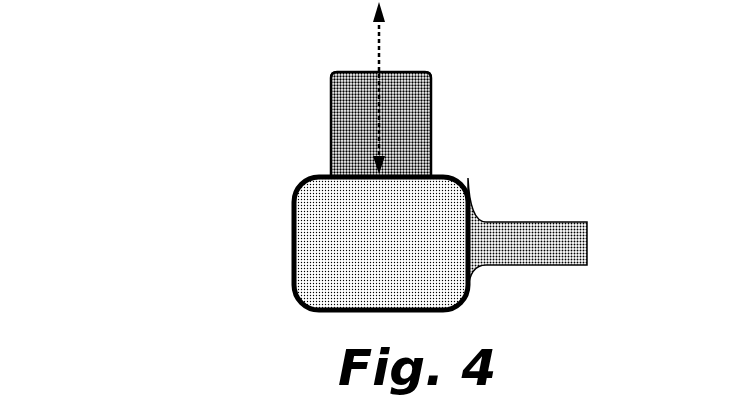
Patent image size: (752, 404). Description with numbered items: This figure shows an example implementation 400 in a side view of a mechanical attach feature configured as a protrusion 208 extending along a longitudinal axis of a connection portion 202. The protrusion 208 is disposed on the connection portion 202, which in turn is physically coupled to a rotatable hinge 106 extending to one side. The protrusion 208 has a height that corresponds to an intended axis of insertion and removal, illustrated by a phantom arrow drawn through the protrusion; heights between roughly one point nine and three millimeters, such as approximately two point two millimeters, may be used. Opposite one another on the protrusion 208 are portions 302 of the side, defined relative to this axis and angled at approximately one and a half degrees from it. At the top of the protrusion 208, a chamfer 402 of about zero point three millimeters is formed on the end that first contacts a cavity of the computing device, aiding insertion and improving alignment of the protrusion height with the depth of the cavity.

The example implementation 400 is at (116, 57).
The protrusion 208 is at (313, 46).
The chamfer 402 is at (419, 74).
The portions of the side 302 is at (328, 131).
The connection portion 202 is at (291, 246).
The rotatable hinge 106 is at (559, 176).